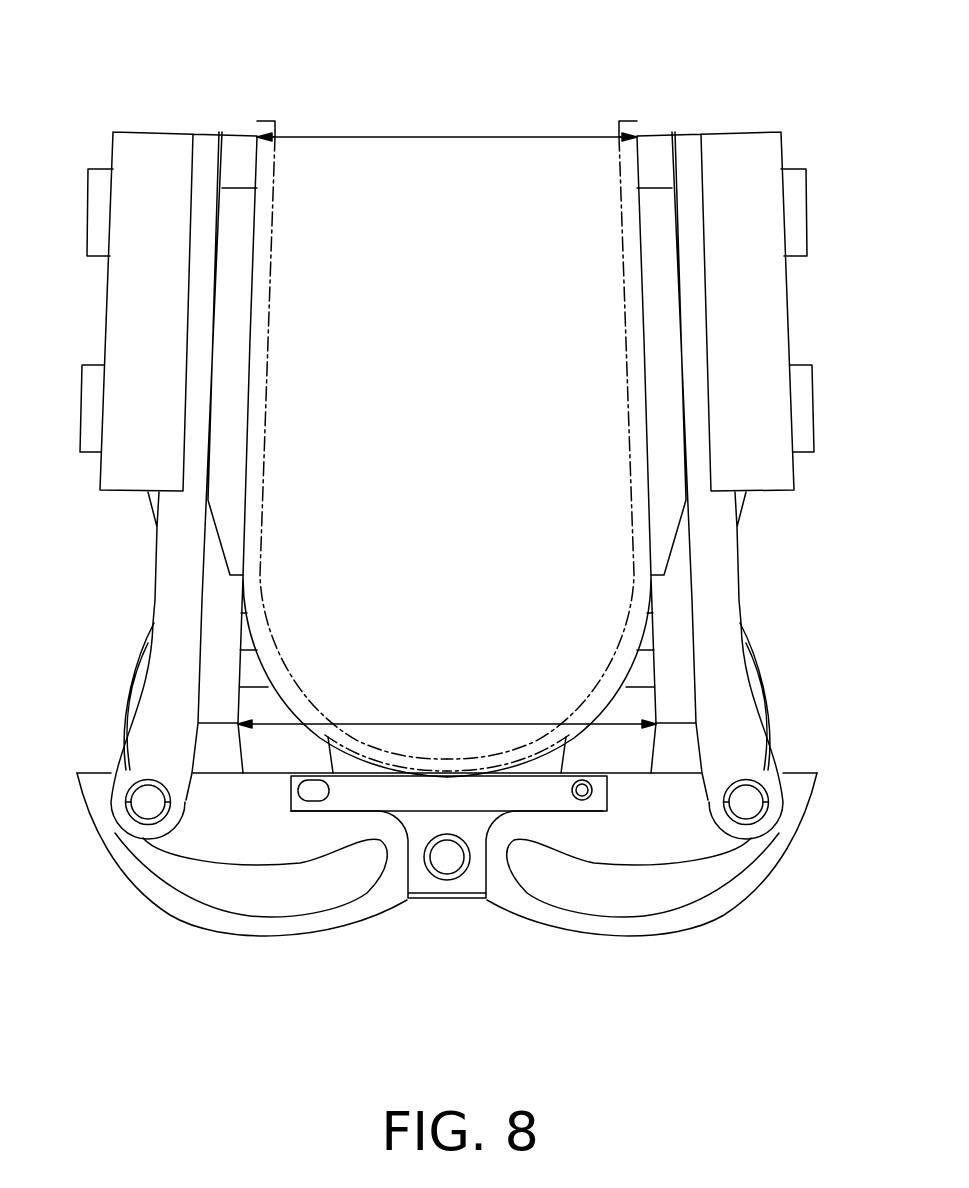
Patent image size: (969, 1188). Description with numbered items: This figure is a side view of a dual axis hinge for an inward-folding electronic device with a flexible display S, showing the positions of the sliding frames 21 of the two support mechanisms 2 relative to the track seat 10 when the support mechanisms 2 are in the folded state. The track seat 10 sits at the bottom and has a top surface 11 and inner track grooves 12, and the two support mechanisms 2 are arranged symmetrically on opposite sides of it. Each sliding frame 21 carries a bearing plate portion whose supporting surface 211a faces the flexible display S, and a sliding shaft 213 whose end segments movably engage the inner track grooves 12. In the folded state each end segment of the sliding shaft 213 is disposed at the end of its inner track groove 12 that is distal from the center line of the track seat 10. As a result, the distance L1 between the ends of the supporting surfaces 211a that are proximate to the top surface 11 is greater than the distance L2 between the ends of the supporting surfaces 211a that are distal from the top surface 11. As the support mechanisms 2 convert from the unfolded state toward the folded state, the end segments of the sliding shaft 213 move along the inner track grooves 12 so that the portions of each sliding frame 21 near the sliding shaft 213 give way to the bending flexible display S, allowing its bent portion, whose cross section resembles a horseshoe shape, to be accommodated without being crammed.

The support mechanism 2 is at (130, 122).
The sliding frame 21 is at (128, 315).
The supporting surface 211a is at (253, 292).
The sliding shaft 213 is at (148, 802).
The flexible display S is at (634, 120).
The track seat 10 is at (477, 882).
The top surface 11 is at (398, 776).
The inner track groove 12 is at (264, 888).
The distance between proximate ends of supporting surfaces L1 is at (447, 710).
The distance between distal ends of supporting surfaces L2 is at (447, 123).